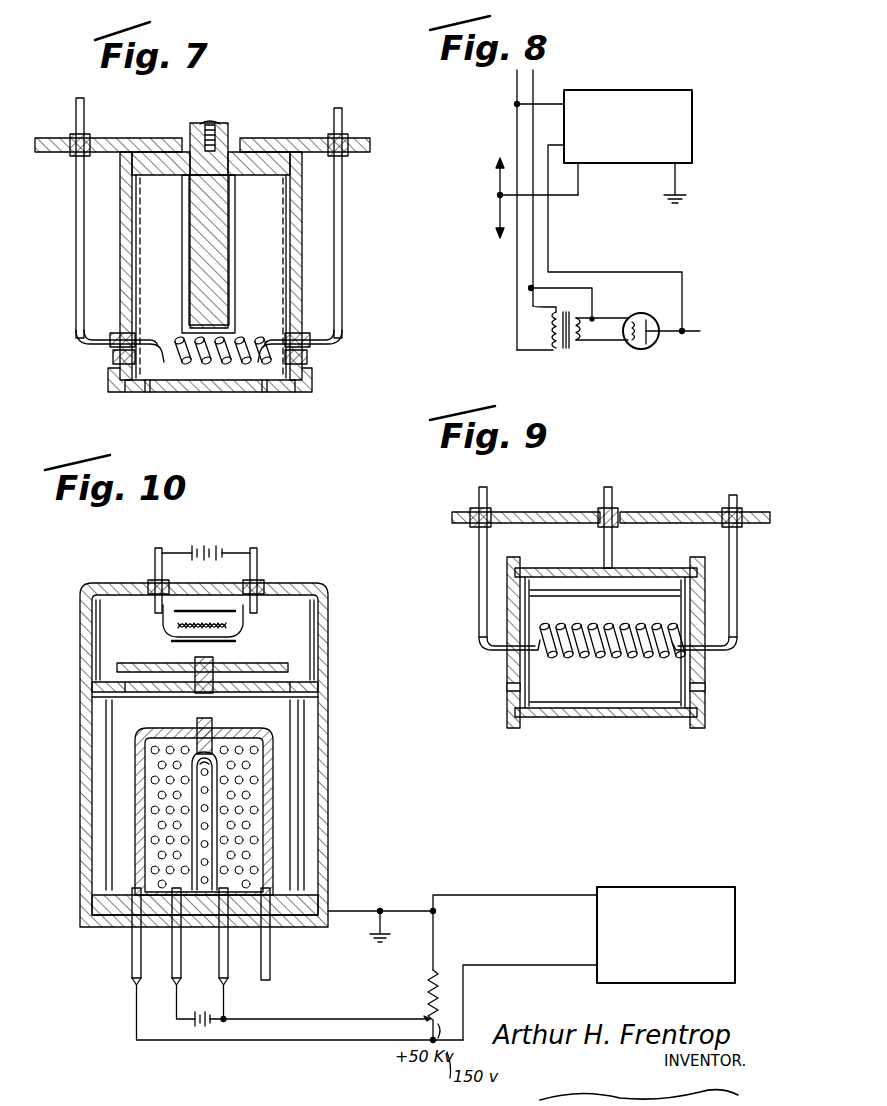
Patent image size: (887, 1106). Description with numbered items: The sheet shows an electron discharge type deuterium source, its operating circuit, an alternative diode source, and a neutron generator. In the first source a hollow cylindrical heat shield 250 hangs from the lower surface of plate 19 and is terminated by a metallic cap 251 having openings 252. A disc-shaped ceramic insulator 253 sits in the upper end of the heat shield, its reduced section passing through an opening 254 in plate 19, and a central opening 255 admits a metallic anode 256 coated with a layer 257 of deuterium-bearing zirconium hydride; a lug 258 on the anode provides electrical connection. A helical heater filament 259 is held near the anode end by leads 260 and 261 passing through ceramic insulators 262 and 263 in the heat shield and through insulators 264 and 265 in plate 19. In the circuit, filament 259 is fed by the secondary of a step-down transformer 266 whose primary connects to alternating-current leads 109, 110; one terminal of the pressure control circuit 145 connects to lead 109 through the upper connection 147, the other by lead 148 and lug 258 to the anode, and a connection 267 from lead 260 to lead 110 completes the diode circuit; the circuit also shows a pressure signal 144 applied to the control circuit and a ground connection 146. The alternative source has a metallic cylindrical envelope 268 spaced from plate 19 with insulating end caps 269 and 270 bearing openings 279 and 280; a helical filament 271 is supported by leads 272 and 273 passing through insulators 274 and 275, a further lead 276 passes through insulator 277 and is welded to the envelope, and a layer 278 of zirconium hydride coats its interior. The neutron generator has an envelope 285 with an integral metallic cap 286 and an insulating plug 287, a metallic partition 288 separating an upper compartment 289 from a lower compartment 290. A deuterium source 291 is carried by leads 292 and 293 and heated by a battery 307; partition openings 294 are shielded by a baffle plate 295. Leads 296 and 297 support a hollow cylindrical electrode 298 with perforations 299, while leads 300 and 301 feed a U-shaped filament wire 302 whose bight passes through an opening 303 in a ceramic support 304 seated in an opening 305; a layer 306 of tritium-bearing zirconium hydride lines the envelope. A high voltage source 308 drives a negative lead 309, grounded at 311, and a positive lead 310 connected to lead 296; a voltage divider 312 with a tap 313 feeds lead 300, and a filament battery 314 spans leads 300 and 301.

In FIG. 7, the plate 19 is at (52, 155).
In FIG. 9, the plate 19 is at (556, 510).
In FIG. 8, the alternating-current lead 109 is at (514, 100).
In FIG. 8, the alternating-current lead 110 is at (540, 74).
In FIG. 8, the pressure signal arrow 144 is at (496, 216).
In FIG. 8, the pressure control circuit 145 is at (692, 124).
In FIG. 8, the ground connection 146 is at (680, 174).
In FIG. 8, the lead 147 is at (546, 102).
In FIG. 8, the lead 148 is at (552, 220).
In FIG. 7, the heat shield 250 is at (120, 214).
In FIG. 7, the metallic cap 251 is at (108, 380).
In FIG. 7, the openings 252 is at (262, 394).
In FIG. 7, the ceramic insulator 253 is at (172, 177).
In FIG. 7, the opening 254 is at (166, 138).
In FIG. 7, the central opening 255 is at (240, 142).
In FIG. 7, the metallic anode 256 is at (228, 180).
In FIG. 8, the metallic anode 256 is at (654, 342).
In FIG. 7, the layer of zirconium hydride 257 is at (180, 266).
In FIG. 7, the lug 258 is at (222, 120).
In FIG. 8, the lug 258 is at (700, 331).
In FIG. 7, the helical heater filament 259 is at (240, 338).
In FIG. 8, the helical heater filament 259 is at (641, 350).
In FIG. 7, the lead 260 is at (76, 283).
In FIG. 8, the lead 260 is at (630, 314).
In FIG. 7, the lead 261 is at (342, 290).
In FIG. 8, the lead 261 is at (598, 348).
In FIG. 7, the ceramic insulator 262 is at (138, 332).
In FIG. 7, the ceramic insulator 263 is at (310, 356).
In FIG. 7, the ceramic insulator 264 is at (70, 142).
In FIG. 7, the ceramic insulator 265 is at (342, 138).
In FIG. 8, the step-down transformer 266 is at (562, 356).
In FIG. 8, the connection 267 is at (528, 286).
In FIG. 9, the metallic cylindrical envelope 268 is at (646, 568).
In FIG. 9, the end cap 269 is at (520, 556).
In FIG. 9, the end cap 270 is at (708, 669).
In FIG. 9, the helical heater filament 271 is at (560, 658).
In FIG. 9, the lead 272 is at (490, 490).
In FIG. 9, the lead 273 is at (740, 497).
In FIG. 9, the ceramic insulator 274 is at (500, 510).
In FIG. 9, the ceramic insulator 275 is at (722, 512).
In FIG. 9, the lead 276 is at (604, 484).
In FIG. 9, the ceramic insulator 277 is at (620, 510).
In FIG. 9, the layer of zirconium hydride 278 is at (632, 708).
In FIG. 9, the openings 279 is at (510, 600).
In FIG. 9, the openings 280 is at (708, 690).
In FIG. 10, the envelope 285 is at (332, 645).
In FIG. 10, the metallic cap 286 is at (302, 580).
In FIG. 10, the electrical insulating plug 287 is at (290, 928).
In FIG. 10, the metallic partition 288 is at (314, 684).
In FIG. 10, the upper compartment 289 is at (298, 634).
In FIG. 10, the lower compartment 290 is at (312, 742).
In FIG. 10, the deuterium source 291 is at (163, 628).
In FIG. 10, the lead 292 is at (152, 560).
In FIG. 10, the lead 293 is at (260, 560).
In FIG. 10, the openings 294 is at (138, 692).
In FIG. 10, the metallic baffle plate 295 is at (190, 662).
In FIG. 10, the lead 296 is at (132, 974).
In FIG. 10, the lead 297 is at (270, 972).
In FIG. 10, the hollow cylindrical electrode 298 is at (135, 736).
In FIG. 10, the openings or perforations 299 is at (140, 778).
In FIG. 10, the lead 300 is at (230, 980).
In FIG. 10, the lead 301 is at (172, 980).
In FIG. 10, the filament wire 302 is at (216, 798).
In FIG. 10, the opening 303 is at (216, 758).
In FIG. 10, the ceramic support 304 is at (220, 726).
In FIG. 10, the opening 305 is at (198, 766).
In FIG. 10, the layer of zirconium hydride 306 is at (308, 768).
In FIG. 10, the battery 307 is at (212, 545).
In FIG. 10, the high voltage source 308 is at (670, 886).
In FIG. 10, the negative lead 309 is at (478, 893).
In FIG. 10, the positive lead 310 is at (480, 963).
In FIG. 10, the ground 311 is at (386, 926).
In FIG. 10, the voltage divider 312 is at (426, 994).
In FIG. 10, the tap 313 is at (422, 1012).
In FIG. 10, the filament battery 314 is at (199, 1028).